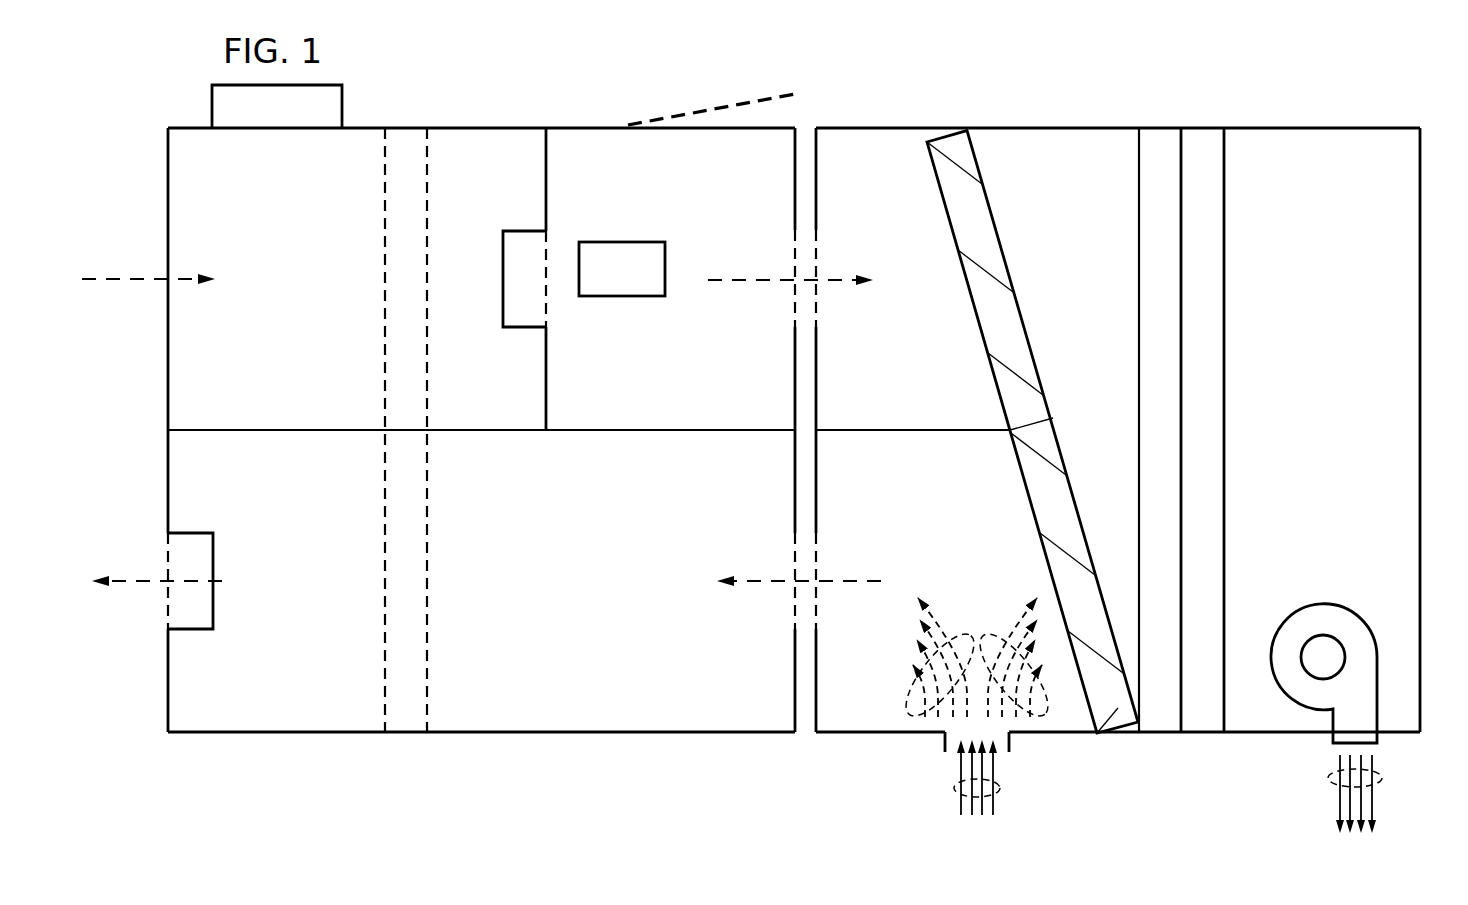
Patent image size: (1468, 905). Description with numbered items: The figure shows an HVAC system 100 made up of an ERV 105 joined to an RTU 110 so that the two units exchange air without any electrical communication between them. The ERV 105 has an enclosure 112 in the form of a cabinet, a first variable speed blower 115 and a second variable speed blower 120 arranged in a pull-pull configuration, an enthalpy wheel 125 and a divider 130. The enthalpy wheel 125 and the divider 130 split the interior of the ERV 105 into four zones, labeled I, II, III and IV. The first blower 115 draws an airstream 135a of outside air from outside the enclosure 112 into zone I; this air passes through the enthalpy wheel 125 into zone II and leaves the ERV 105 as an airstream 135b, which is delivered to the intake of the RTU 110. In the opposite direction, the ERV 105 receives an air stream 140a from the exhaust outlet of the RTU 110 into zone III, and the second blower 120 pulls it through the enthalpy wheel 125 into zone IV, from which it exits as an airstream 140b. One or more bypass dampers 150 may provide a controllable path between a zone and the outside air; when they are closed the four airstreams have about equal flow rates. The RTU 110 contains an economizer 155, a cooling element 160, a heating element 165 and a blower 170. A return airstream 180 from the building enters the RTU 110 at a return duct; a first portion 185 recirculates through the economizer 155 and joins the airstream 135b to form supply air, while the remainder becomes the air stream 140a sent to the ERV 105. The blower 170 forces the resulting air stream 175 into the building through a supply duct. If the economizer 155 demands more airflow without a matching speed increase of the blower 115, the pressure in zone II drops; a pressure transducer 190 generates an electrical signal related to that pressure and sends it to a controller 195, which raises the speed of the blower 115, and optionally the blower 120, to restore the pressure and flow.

The HVAC system 100 is at (922, 66).
The ERV 105 is at (577, 119).
The RTU 110 is at (1336, 121).
The enclosure 112 is at (492, 127).
The first variable speed blower 115 is at (523, 229).
The second variable speed blower 120 is at (190, 630).
The enthalpy wheel 125 is at (384, 629).
The divider 130 is at (277, 429).
The airstream 135a is at (138, 277).
The airstream 135b is at (770, 278).
The air stream 140a is at (767, 583).
The airstream 140b is at (138, 583).
The bypass damper 150 is at (715, 107).
The economizer 155 is at (993, 213).
The cooling element 160 is at (1139, 325).
The heating element 165 is at (1224, 325).
The blower 170 is at (1358, 613).
The air stream 175 is at (1382, 780).
The return airstream 180 is at (1000, 787).
The first portion 185 is at (993, 643).
The pressure transducer 190 is at (603, 283).
The controller 195 is at (212, 107).